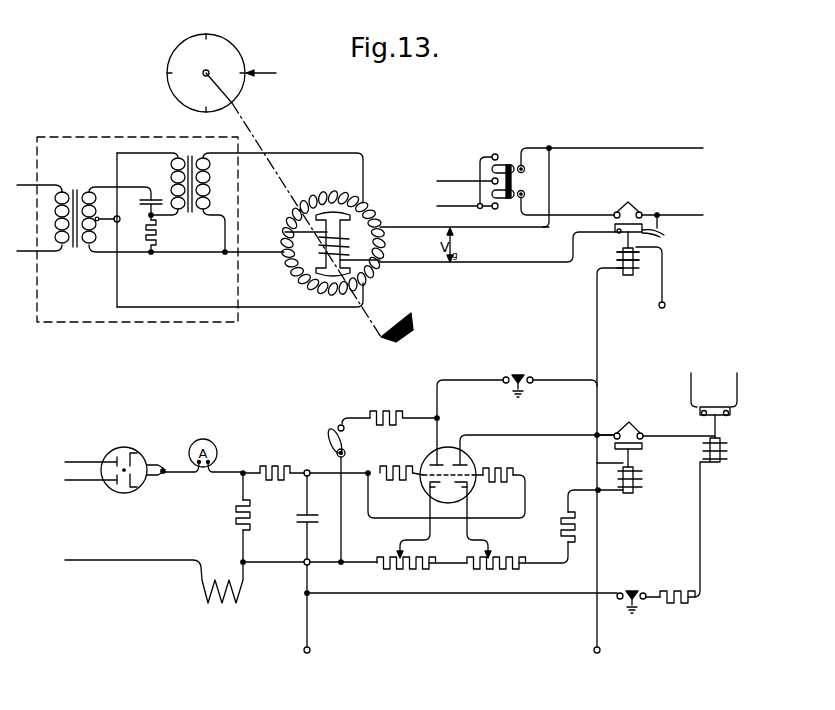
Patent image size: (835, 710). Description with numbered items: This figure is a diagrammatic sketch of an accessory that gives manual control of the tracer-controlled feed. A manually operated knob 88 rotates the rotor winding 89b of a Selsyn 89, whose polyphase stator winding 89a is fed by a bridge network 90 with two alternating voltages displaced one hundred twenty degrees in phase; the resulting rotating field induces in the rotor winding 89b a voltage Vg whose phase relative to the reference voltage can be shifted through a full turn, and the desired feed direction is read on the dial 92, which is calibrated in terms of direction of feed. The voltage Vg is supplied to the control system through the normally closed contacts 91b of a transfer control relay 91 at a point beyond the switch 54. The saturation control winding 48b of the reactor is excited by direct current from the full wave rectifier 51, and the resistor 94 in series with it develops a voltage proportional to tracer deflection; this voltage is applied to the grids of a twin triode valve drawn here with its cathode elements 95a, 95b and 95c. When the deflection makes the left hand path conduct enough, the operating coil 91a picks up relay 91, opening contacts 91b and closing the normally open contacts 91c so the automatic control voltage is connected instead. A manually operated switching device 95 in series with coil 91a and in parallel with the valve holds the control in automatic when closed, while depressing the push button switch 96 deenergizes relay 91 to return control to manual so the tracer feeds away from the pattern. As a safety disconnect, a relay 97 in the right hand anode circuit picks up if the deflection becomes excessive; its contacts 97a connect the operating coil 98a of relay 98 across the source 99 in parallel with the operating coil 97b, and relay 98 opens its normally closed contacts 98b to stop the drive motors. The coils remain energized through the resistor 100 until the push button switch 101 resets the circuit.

The dial 92 is at (172, 52).
The bridge network 90 is at (86, 137).
The Selsyn 89 is at (386, 201).
The polyphase stator winding 89a is at (293, 272).
The rotor winding 89b is at (290, 232).
The manually operated knob 88 is at (393, 346).
The switch 54 is at (504, 149).
The transfer control relay 91 is at (617, 252).
The operating coil 91a is at (640, 266).
The normally closed contacts 91b is at (664, 236).
The normally open contacts 91c is at (632, 208).
The push button switch 96 is at (518, 372).
The manually operated switching device 95 is at (331, 434).
The cathode 95a is at (430, 480).
The cathode 95b is at (470, 480).
The cathode lead 95c is at (432, 490).
The full wave electric valve type rectifier 51 is at (125, 447).
The resistor 94 is at (237, 513).
The saturation control winding 48b is at (154, 596).
The source 99 is at (310, 620).
The relay 97 is at (648, 456).
The contacts 97a is at (655, 421).
The operating coil 97b is at (650, 485).
The relay 98 is at (700, 430).
The operating coil 98a is at (731, 451).
The normally closed contacts 98b is at (733, 418).
The resistor 100 is at (671, 587).
The push button switch 101 is at (632, 590).